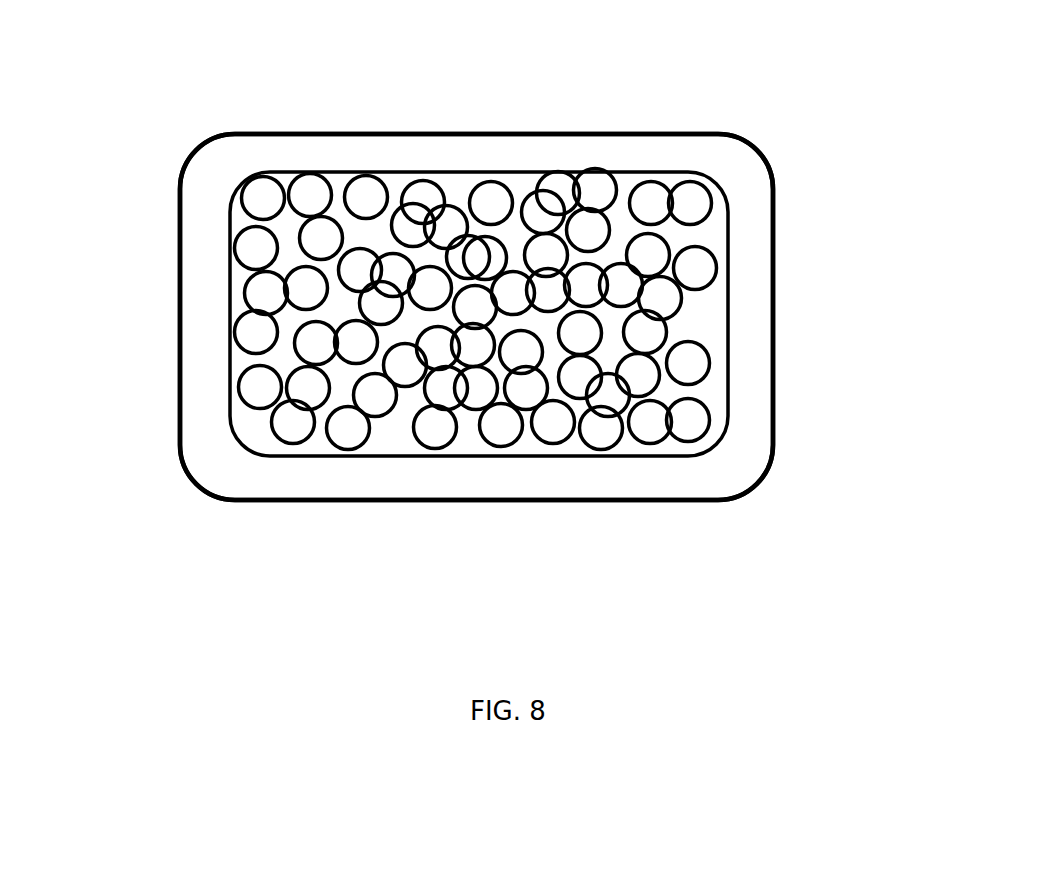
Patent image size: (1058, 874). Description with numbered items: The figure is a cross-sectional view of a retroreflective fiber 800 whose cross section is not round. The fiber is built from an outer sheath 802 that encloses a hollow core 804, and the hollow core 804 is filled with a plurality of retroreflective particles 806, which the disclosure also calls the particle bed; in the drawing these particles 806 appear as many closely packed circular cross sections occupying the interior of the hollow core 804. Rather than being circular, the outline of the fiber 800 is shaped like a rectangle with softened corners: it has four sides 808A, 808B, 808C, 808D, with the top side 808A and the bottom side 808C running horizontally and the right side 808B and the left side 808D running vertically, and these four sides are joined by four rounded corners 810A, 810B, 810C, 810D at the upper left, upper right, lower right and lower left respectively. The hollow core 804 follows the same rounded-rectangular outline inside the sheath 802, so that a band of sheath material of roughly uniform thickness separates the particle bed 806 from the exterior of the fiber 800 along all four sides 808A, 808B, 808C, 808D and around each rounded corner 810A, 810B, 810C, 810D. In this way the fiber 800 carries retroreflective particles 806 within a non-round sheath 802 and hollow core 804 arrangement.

The retroreflective fiber 800 is at (475, 318).
The sheath 802 is at (578, 482).
The hollow core 804 is at (695, 240).
The retroreflective particles 806 is at (356, 347).
The side 808A is at (467, 113).
The side 808B is at (804, 307).
The side 808C is at (468, 526).
The side 808D is at (151, 322).
The rounded corner 810A is at (183, 126).
The rounded corner 810B is at (778, 135).
The rounded corner 810C is at (775, 497).
The rounded corner 810D is at (203, 513).